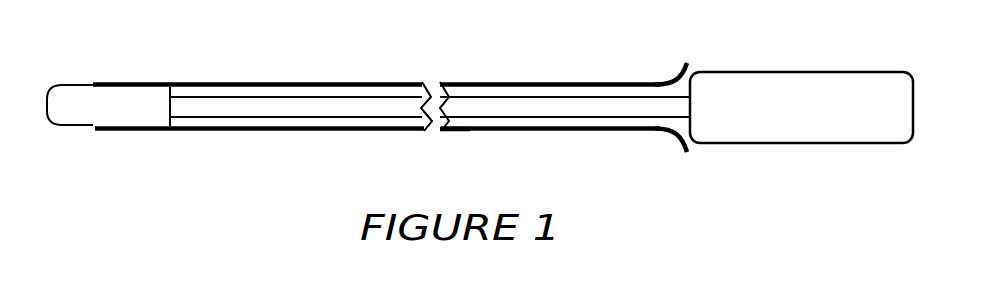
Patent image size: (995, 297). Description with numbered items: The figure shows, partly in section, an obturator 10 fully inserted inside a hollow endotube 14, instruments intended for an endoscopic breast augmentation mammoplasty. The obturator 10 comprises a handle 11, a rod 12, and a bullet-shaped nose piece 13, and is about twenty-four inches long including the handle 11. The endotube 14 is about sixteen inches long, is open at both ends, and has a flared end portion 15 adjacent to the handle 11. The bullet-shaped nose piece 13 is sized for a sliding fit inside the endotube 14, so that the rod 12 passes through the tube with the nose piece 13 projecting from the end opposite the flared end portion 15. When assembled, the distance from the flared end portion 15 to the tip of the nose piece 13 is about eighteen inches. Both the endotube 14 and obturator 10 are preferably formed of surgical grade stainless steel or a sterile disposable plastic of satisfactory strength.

The obturator 10 is at (527, 131).
The handle 11 is at (810, 93).
The rod 12 is at (545, 106).
The bullet-shaped nose piece 13 is at (63, 104).
The endotube 14 is at (255, 82).
The flared end portion 15 is at (686, 65).